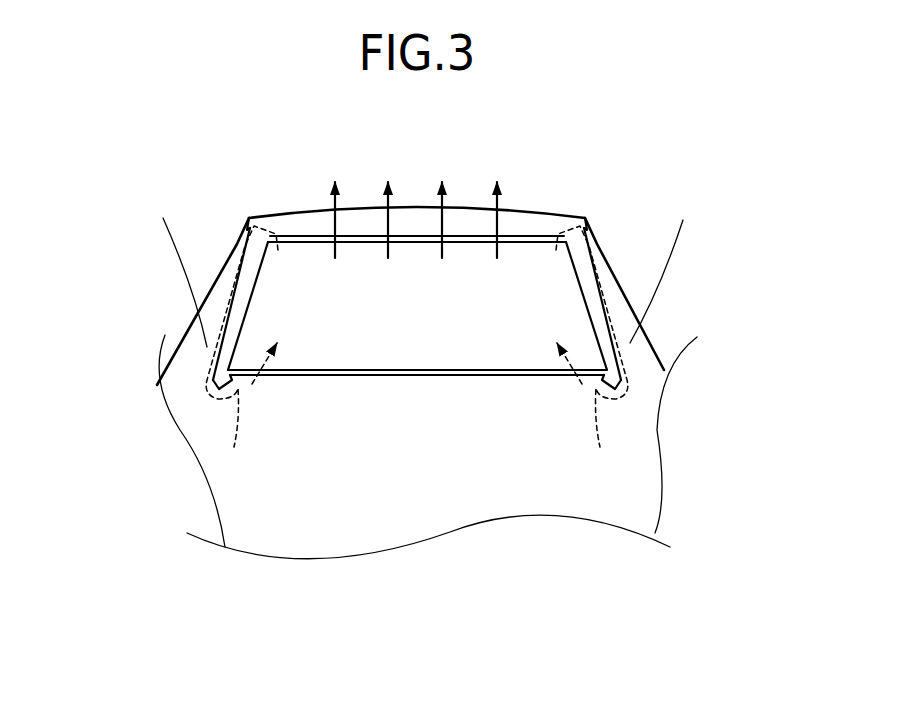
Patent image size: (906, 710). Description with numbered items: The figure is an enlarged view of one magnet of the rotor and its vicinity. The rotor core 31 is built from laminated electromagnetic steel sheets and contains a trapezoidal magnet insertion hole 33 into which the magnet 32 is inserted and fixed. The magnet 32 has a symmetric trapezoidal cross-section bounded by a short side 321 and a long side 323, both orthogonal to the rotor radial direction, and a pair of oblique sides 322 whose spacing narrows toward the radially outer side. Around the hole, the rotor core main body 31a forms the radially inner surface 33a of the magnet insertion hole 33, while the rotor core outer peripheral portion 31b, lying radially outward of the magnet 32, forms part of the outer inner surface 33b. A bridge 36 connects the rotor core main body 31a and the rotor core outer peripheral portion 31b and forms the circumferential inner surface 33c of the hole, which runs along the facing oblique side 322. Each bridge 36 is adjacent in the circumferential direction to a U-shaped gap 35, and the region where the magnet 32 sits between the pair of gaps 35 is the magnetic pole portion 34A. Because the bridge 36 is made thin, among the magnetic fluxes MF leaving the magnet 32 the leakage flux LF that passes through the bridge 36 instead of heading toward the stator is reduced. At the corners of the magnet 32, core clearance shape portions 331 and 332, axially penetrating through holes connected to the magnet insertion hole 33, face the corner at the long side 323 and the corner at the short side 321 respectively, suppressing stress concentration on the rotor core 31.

The rotor core 31 is at (629, 495).
The rotor core main body 31a is at (307, 497).
The rotor core outer peripheral portion 31b is at (415, 213).
The magnet 32 is at (512, 285).
The short side 321 is at (461, 236).
The oblique side 322 is at (227, 357).
The long side 323 is at (441, 379).
The magnet insertion hole 33 is at (340, 379).
The inner surface 33a is at (397, 369).
The inner surface 33b is at (401, 243).
The inner surface 33c is at (249, 296).
The core clearance shape portion 331 is at (214, 389).
The core clearance shape portion 332 is at (246, 233).
The magnetic pole portion 34A is at (366, 204).
The gap 35 is at (177, 313).
The bridge 36 is at (422, 270).
The magnetic flux MF is at (336, 226).
The leakage flux LF is at (417, 350).